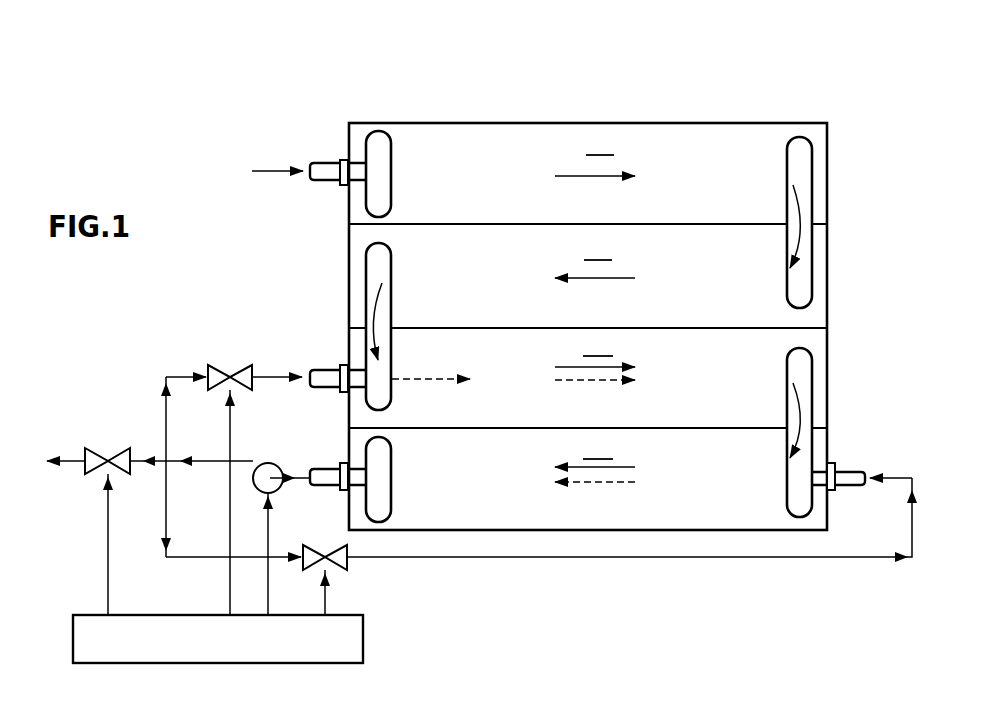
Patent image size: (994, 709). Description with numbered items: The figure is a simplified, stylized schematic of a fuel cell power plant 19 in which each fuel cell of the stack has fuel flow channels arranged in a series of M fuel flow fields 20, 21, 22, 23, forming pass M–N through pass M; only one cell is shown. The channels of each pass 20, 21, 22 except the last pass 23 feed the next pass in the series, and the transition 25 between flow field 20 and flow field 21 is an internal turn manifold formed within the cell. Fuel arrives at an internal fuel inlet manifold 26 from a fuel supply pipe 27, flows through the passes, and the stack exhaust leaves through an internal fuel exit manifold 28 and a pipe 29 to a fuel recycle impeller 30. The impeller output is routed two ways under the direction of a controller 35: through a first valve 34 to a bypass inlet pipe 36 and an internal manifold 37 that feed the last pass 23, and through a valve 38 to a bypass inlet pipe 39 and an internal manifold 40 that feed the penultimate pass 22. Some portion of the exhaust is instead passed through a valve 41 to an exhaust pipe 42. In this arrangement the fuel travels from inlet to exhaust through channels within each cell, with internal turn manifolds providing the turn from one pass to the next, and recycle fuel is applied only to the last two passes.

The fuel cell power plant 19 is at (613, 271).
The fuel flow field (pass M–N) 20 is at (585, 174).
The fuel flow field (pass M–2) 21 is at (585, 278).
The fuel flow field (pass M–1) 22 is at (585, 376).
The fuel flow field (pass M) 23 is at (590, 478).
The transition 25 is at (800, 178).
The internal fuel inlet manifold 26 is at (377, 153).
The fuel supply pipe 27 is at (332, 183).
The internal fuel exit manifold 28 is at (377, 509).
The pipe 29 is at (337, 487).
The fuel recycle impeller 30 is at (271, 465).
The first valve 34 is at (337, 545).
The controller 35 is at (340, 613).
The bypass inlet pipe 36 is at (840, 474).
The internal manifold 37 is at (808, 447).
The valve 38 is at (225, 364).
The bypass inlet pipe 39 is at (333, 371).
The internal manifold 40 is at (377, 264).
The valve 41 is at (108, 453).
The exhaust pipe 42 is at (73, 460).